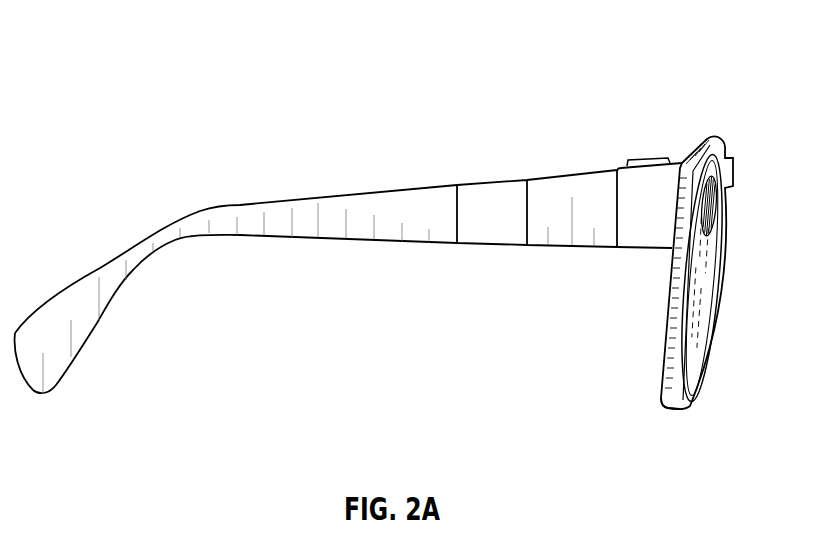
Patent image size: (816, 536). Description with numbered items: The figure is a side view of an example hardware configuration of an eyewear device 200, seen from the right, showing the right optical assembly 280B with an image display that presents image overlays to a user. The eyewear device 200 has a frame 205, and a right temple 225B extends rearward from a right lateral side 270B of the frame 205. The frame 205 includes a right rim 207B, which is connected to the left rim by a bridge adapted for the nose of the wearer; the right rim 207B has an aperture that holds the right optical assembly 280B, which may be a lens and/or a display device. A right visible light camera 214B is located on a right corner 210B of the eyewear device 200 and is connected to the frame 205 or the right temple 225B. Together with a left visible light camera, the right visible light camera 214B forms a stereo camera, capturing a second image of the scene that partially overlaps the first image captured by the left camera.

The eyewear device 200 is at (177, 61).
The frame 205 is at (706, 142).
The right rim 207B is at (668, 404).
The right corner 210B is at (640, 245).
The right visible light camera 214B is at (701, 237).
The right temple 225B is at (212, 222).
The right lateral side 270B is at (653, 163).
The right optical assembly 280B is at (697, 327).